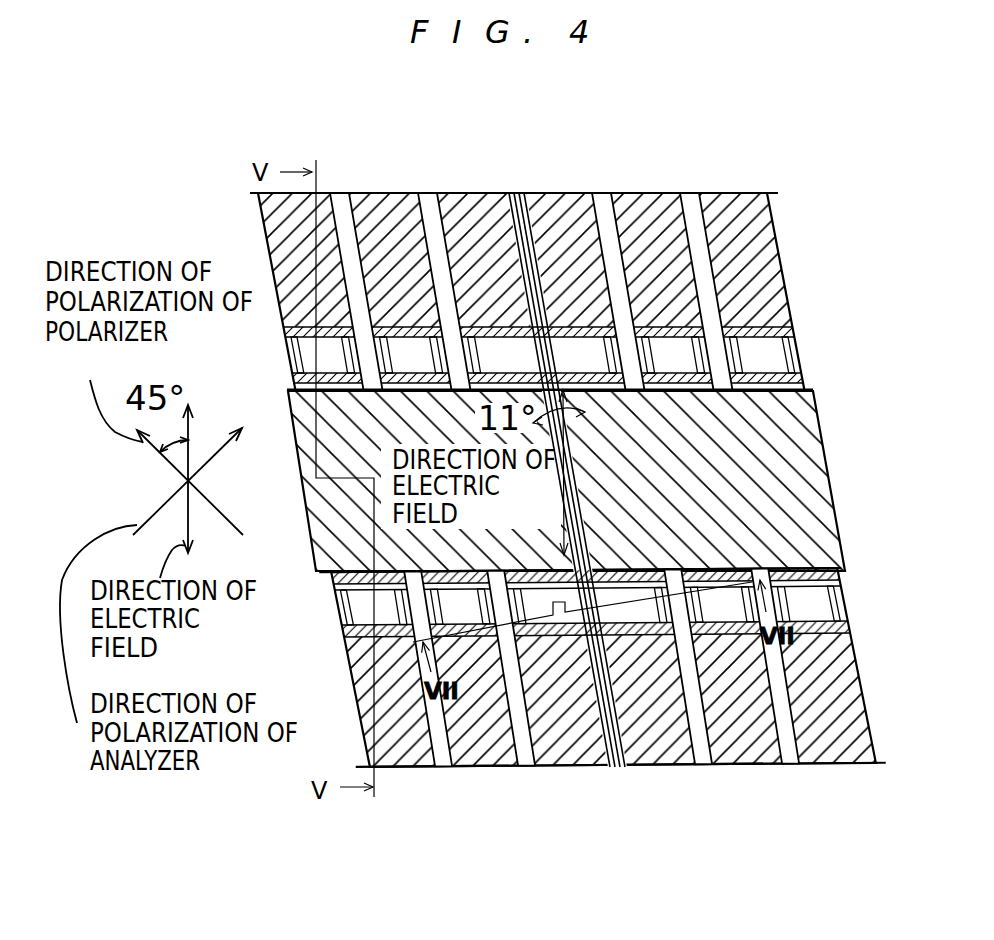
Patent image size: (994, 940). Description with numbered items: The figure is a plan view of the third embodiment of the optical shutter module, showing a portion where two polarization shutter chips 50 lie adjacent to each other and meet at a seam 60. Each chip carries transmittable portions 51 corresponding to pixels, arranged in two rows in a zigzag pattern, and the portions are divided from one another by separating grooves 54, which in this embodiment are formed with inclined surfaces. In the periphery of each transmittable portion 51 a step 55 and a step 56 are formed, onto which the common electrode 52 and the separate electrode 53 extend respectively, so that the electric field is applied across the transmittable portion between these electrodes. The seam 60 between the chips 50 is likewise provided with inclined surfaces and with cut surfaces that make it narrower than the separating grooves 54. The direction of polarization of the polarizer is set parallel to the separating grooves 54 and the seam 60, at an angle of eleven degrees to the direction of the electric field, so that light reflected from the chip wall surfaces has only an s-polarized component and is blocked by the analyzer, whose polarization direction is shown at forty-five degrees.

The polarization shutter chip 50 is at (401, 190).
The transmittable portion 51 is at (310, 349).
The common electrode 52 is at (790, 437).
The separate electrode 53 is at (373, 208).
The separating groove 54 is at (425, 200).
The step 55 is at (300, 380).
The step 56 is at (297, 328).
The seam 60 is at (512, 193).